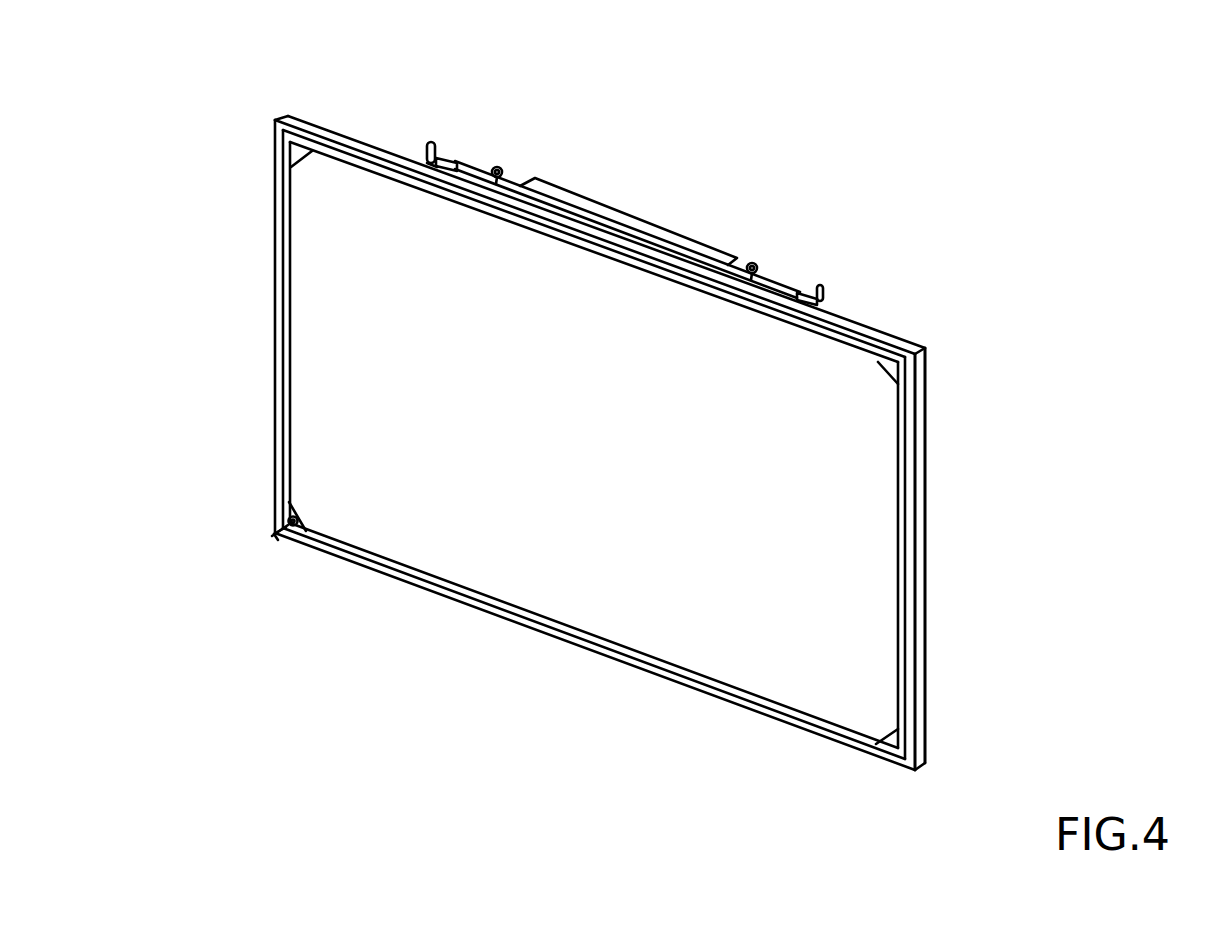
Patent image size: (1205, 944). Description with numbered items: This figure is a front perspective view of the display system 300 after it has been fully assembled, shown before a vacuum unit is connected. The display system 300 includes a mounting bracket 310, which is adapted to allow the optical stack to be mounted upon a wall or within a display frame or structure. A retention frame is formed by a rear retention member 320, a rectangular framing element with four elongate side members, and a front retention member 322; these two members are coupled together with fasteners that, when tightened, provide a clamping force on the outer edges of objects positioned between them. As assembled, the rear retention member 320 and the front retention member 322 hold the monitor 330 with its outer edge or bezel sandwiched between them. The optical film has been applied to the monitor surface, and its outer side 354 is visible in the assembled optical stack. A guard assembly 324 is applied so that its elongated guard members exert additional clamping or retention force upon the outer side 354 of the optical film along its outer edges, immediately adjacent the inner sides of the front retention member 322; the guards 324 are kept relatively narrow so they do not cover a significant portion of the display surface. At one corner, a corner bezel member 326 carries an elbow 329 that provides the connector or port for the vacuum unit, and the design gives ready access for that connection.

The display system 300 is at (607, 401).
The mounting bracket 310 is at (714, 232).
The rear retention member 320 is at (600, 401).
The front retention member 322 is at (471, 616).
The guard assembly 324 is at (663, 645).
The corner bezel member 326 is at (316, 518).
The elbow 329 is at (283, 548).
The monitor 330 is at (936, 400).
The outer side of optical film 354 is at (330, 460).